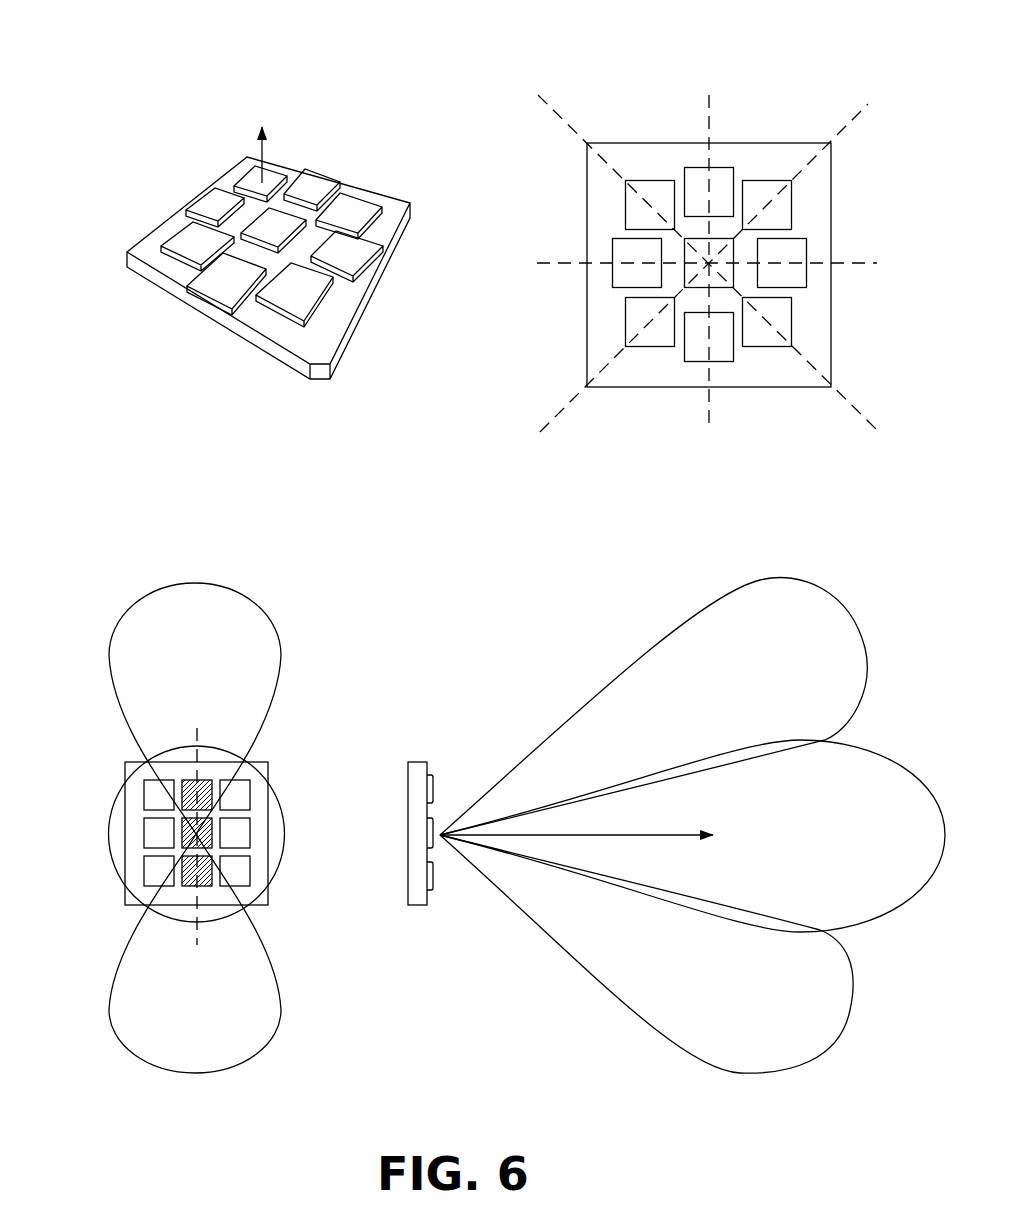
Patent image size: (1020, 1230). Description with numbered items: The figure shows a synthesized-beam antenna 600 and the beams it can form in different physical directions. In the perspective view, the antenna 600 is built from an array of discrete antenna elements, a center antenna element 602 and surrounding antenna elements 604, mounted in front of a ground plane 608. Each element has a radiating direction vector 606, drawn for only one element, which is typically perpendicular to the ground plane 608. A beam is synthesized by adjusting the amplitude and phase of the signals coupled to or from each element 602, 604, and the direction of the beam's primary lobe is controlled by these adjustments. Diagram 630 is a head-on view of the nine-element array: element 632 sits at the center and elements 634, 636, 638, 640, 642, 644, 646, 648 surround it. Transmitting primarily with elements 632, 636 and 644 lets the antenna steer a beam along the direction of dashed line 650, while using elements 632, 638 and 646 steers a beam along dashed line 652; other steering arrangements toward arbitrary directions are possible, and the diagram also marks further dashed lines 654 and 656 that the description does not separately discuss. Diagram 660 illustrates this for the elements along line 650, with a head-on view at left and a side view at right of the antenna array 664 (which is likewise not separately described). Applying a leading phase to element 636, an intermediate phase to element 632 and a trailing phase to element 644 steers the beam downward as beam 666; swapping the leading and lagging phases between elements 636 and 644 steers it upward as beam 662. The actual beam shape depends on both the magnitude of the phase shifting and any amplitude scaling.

The synthesized-beam antenna 600 is at (250, 490).
The antenna element 602 is at (68, 144).
The antenna elements 604 is at (358, 59).
The radiating direction vector 606 is at (154, 50).
The ground plane 608 is at (158, 281).
The diagram 630 is at (691, 486).
The center antenna element 632 is at (700, 240).
The antenna element 634 is at (625, 190).
The antenna element 636 is at (720, 183).
The antenna element 638 is at (793, 188).
The antenna element 640 is at (790, 252).
The antenna element 642 is at (795, 333).
The antenna element 644 is at (717, 340).
The antenna element 646 is at (625, 330).
The antenna element 648 is at (633, 258).
The dashed line 650 is at (709, 90).
The dashed line 652 is at (880, 84).
The horizontal axis 654 is at (880, 266).
The diagonal axis 656 is at (882, 428).
The diagram 660 is at (425, 1086).
The beam 662 is at (663, 708).
The antenna array 664 is at (440, 835).
The beam 666 is at (663, 958).